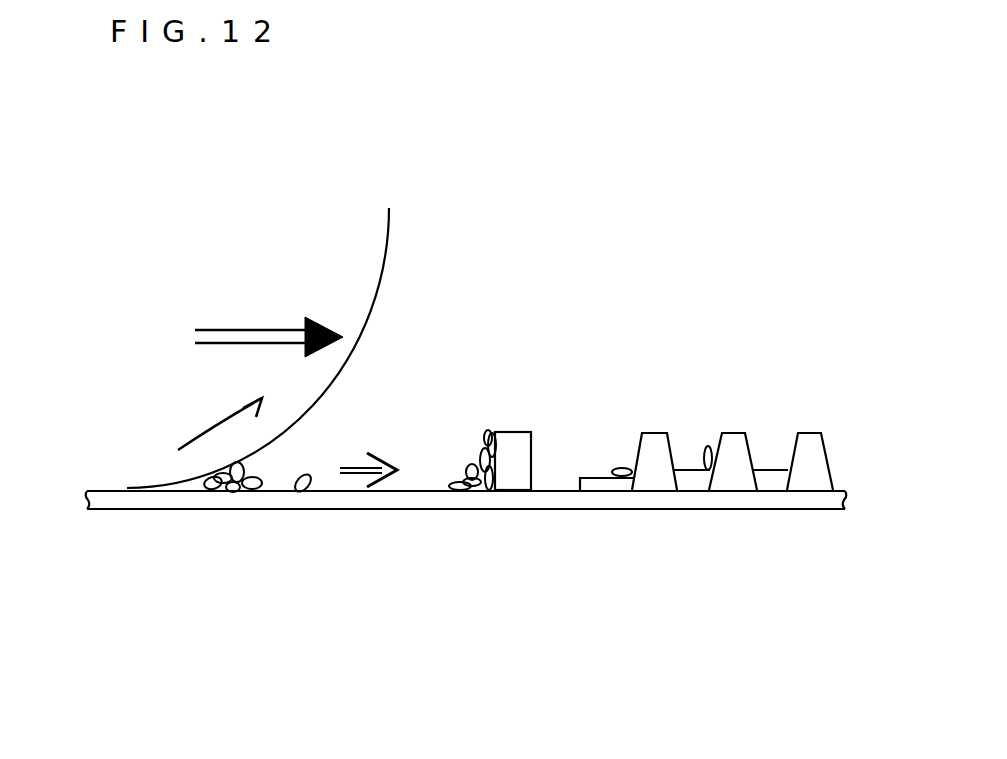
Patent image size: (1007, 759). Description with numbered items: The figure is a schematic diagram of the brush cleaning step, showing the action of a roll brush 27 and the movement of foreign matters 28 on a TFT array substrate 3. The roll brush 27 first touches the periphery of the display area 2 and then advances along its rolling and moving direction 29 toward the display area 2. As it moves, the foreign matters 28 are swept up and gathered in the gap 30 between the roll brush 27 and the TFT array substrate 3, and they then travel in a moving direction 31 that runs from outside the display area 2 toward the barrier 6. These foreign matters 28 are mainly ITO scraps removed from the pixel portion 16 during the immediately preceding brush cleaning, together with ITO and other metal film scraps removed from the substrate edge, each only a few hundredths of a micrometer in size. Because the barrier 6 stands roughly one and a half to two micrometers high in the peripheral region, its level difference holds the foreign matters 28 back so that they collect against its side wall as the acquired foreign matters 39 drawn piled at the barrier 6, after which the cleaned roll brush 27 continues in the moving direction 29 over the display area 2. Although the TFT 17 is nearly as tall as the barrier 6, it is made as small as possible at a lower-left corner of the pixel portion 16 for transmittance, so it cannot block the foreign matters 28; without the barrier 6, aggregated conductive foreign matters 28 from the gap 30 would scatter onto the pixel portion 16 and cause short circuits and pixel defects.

The display area 2 is at (719, 475).
The TFT array substrate 3 is at (263, 497).
The barrier 6 is at (514, 430).
The pixel portion 16 is at (730, 426).
The TFT 17 is at (653, 432).
The roll brush 27 is at (388, 268).
The foreign matters 28 is at (310, 475).
The rolling and moving direction 29 is at (252, 325).
The gap 30 is at (208, 492).
The moving direction 31 is at (353, 477).
The accumulated particles 39 is at (480, 485).